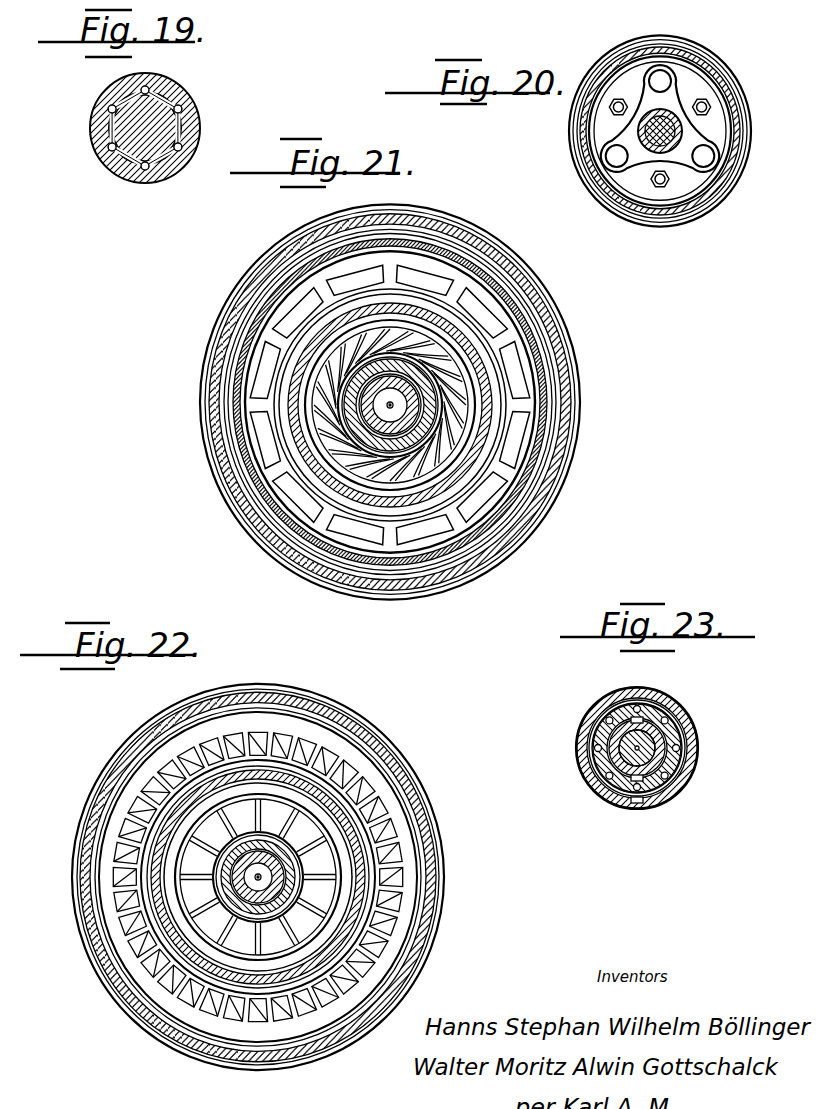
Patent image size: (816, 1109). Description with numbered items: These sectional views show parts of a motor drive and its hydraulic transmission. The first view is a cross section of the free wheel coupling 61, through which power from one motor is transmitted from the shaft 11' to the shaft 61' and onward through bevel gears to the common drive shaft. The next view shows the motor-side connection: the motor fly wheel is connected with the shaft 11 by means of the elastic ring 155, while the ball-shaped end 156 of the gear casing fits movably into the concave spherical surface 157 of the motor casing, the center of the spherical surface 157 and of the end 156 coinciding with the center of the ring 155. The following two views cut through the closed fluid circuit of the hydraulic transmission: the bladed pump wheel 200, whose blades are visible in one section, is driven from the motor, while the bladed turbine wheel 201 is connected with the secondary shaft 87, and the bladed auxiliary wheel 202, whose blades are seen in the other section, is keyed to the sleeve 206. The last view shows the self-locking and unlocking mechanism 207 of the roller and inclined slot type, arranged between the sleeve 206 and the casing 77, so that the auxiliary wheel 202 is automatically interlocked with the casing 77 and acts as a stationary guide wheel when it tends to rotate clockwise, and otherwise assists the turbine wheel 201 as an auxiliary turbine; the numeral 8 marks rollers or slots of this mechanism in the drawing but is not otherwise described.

In FIG. 19, the free wheel coupling 61 is at (145, 145).
In FIG. 19, the shaft 61' is at (116, 128).
In FIG. 19, the shaft 11' is at (184, 119).
In FIG. 20, the concave spherical surface 157 is at (578, 97).
In FIG. 20, the ball-shaped end 156 is at (583, 152).
In FIG. 20, the elastic ring 155 is at (680, 178).
In FIG. 20, the shaft 11 is at (689, 176).
In FIG. 21, the casing 77 is at (576, 400).
In FIG. 22, the casing 77 is at (379, 746).
In FIG. 23, the casing 77 is at (680, 716).
In FIG. 21, the pump wheel 200 is at (470, 444).
In FIG. 21, the secondary shaft 87 is at (363, 398).
In FIG. 22, the secondary shaft 87 is at (222, 902).
In FIG. 23, the secondary shaft 87 is at (680, 797).
In FIG. 22, the turbine wheel 201 is at (262, 732).
In FIG. 22, the auxiliary wheel 202 is at (318, 862).
In FIG. 23, the ring 8 is at (598, 706).
In FIG. 23, the sleeve 206 is at (590, 782).
In FIG. 23, the self-locking and unlocking mechanism 207 is at (677, 808).